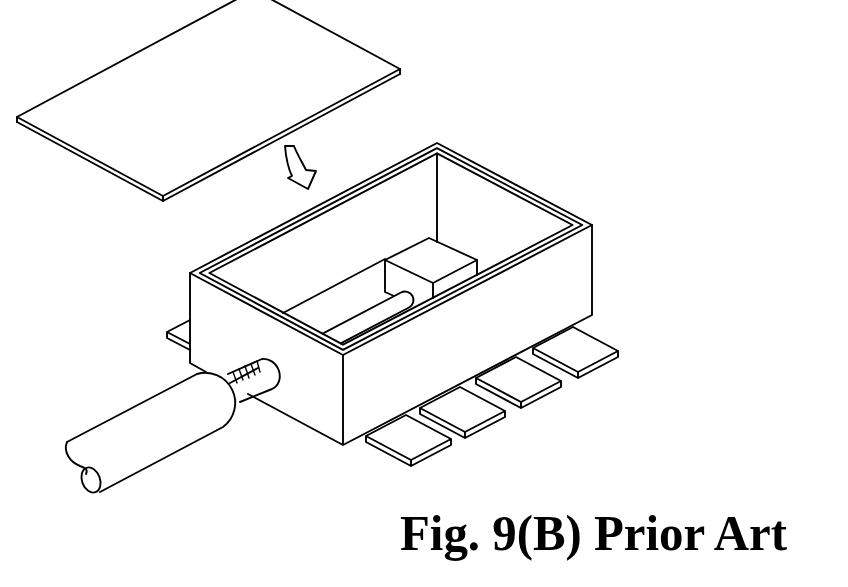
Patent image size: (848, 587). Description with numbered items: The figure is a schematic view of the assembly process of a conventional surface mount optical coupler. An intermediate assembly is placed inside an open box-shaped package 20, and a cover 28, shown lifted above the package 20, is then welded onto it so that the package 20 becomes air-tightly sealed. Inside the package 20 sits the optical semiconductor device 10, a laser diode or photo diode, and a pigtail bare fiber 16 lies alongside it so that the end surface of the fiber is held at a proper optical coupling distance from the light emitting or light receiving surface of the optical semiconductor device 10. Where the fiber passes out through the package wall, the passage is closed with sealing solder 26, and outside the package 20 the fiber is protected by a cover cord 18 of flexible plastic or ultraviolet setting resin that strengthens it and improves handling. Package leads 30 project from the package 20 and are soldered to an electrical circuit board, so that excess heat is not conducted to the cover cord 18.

The optical semiconductor device 10 is at (428, 253).
The pigtail bare fiber 16 is at (377, 313).
The cover cord 18 is at (172, 428).
The package 20 is at (574, 282).
The sealing solder 26 is at (243, 385).
The cover 28 is at (112, 150).
The package leads 30 is at (478, 412).